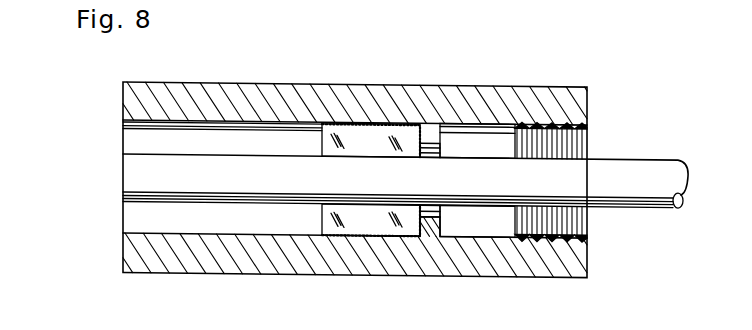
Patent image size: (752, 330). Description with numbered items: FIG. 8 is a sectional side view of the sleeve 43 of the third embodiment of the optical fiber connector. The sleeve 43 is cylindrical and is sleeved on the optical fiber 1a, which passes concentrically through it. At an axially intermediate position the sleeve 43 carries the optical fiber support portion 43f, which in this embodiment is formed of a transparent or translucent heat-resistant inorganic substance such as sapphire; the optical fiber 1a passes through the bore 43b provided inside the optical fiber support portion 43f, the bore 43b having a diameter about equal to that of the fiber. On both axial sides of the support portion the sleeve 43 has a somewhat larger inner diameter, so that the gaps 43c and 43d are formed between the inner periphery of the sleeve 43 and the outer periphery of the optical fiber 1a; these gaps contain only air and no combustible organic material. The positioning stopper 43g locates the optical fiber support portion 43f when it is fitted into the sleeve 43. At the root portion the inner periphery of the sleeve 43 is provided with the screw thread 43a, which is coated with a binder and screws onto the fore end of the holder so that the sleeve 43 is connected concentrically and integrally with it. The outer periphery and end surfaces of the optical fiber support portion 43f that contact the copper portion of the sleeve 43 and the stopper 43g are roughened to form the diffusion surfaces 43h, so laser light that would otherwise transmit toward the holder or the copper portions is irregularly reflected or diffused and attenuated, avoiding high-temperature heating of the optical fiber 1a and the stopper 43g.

The sleeve 43 is at (412, 77).
The screw thread 43a is at (556, 126).
The bore 43b is at (364, 196).
The gap 43c is at (195, 222).
The gap 43d is at (495, 138).
The optical fiber support portion 43f is at (360, 217).
The positioning stopper 43g is at (428, 219).
The diffusion surfaces 43h is at (348, 122).
The optical fiber 1a is at (631, 162).